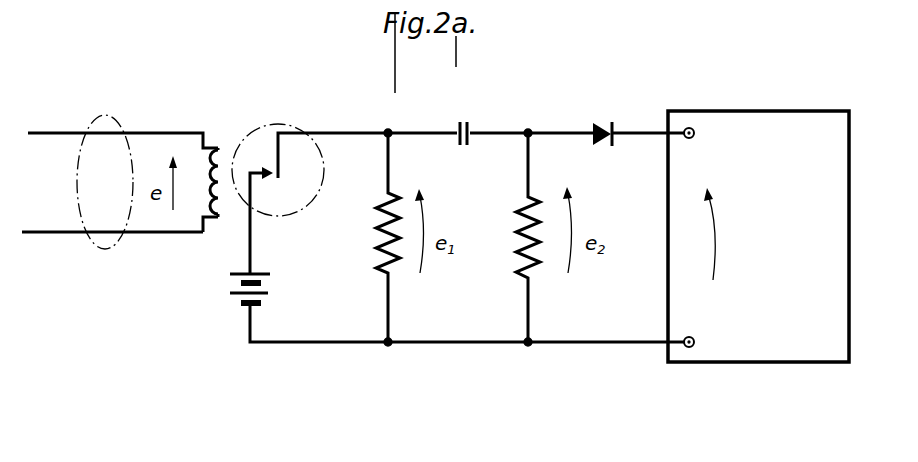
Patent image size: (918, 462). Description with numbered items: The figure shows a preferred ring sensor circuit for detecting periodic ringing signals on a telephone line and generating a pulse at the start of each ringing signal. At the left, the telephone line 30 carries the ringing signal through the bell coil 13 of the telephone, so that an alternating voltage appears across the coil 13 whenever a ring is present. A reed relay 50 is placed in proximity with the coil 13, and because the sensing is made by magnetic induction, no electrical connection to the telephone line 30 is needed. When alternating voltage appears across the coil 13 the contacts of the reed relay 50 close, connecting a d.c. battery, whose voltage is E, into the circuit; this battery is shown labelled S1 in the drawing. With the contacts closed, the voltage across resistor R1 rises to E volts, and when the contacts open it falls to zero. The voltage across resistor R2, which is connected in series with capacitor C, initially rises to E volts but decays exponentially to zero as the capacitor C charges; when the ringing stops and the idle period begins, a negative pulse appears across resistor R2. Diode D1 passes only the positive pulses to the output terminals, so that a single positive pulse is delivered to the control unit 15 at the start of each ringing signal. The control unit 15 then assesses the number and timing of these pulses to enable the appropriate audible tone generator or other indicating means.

The bell coil 13 is at (221, 146).
The telephone line 30 is at (121, 127).
The reed relay 50 is at (300, 121).
The battery S1 is at (272, 288).
The voltage E is at (203, 290).
The resistor R1 is at (370, 237).
The resistor R2 is at (536, 237).
The capacitor C is at (458, 118).
The diode D1 is at (606, 120).
The control unit 15 is at (846, 282).